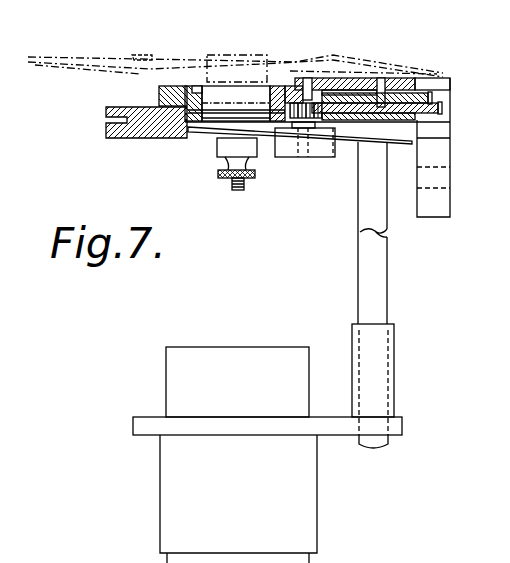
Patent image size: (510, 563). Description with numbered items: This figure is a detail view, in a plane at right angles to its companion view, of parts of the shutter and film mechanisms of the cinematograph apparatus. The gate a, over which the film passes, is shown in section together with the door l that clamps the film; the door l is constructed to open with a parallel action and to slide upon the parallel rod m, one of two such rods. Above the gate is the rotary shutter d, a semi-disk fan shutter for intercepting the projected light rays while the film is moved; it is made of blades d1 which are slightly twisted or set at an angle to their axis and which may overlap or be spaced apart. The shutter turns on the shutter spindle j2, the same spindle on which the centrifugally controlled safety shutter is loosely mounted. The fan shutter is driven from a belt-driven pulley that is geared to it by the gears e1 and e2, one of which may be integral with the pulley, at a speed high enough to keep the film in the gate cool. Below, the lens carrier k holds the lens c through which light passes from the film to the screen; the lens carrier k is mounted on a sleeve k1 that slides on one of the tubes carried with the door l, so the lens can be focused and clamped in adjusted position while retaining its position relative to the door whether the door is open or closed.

The gate a is at (156, 134).
The door l is at (159, 96).
The blades d1 is at (138, 48).
The rotary shutter d is at (227, 62).
The shutter spindle j2 is at (296, 120).
The gear e1 is at (430, 97).
The gear e2 is at (292, 123).
The parallel rod m is at (367, 203).
The sleeve k1 is at (380, 347).
The lens carrier k is at (143, 423).
The lens c is at (182, 377).